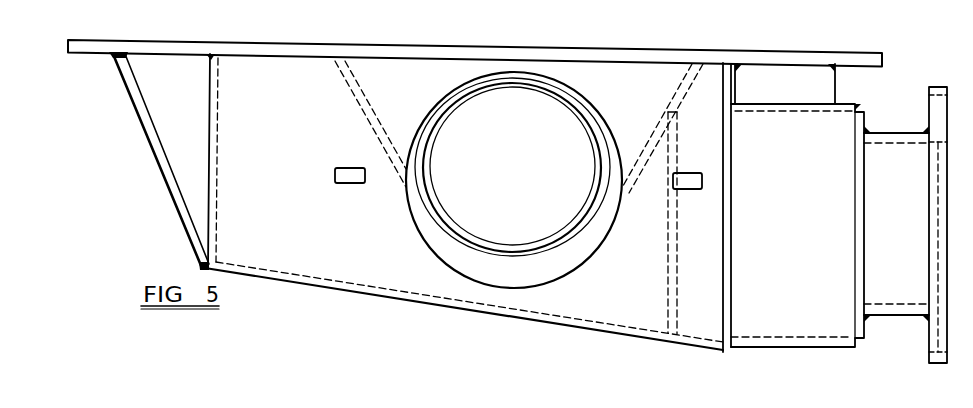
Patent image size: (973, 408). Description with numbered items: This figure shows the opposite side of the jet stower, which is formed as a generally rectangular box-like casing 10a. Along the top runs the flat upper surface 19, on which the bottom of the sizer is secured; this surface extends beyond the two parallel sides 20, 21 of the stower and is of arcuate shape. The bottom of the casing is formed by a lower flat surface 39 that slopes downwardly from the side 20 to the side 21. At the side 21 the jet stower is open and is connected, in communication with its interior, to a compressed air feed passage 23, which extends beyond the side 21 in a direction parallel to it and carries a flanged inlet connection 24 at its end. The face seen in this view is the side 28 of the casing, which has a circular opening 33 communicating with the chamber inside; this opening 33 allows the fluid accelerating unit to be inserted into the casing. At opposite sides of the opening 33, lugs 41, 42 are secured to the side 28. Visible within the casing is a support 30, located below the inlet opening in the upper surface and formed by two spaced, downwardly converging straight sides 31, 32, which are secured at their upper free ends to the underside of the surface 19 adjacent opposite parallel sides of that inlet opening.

The casing 10a is at (390, 270).
The flat upper surface 19 is at (775, 51).
The side 20 is at (210, 176).
The side 21 is at (735, 92).
The compressed air feed passage 23 is at (790, 320).
The flanged inlet connection 24 is at (895, 290).
The side of the casing 28 is at (468, 203).
The support 30 is at (376, 88).
The straight side of support 31 is at (370, 60).
The straight side of support 32 is at (648, 125).
The circular opening 33 is at (592, 243).
The lower flat surface 39 is at (457, 308).
The lug 41 is at (343, 172).
The lug 42 is at (685, 176).